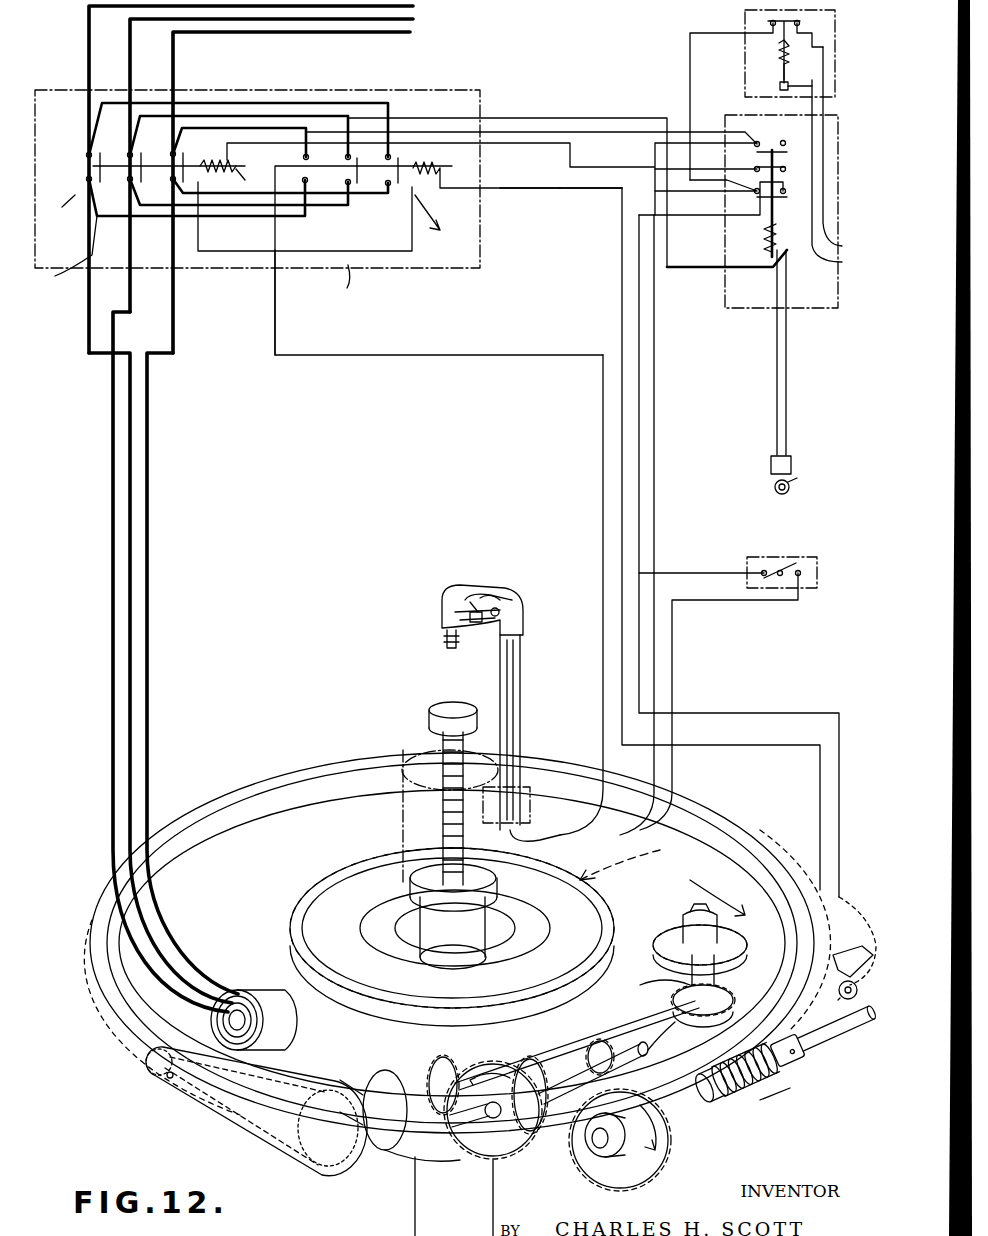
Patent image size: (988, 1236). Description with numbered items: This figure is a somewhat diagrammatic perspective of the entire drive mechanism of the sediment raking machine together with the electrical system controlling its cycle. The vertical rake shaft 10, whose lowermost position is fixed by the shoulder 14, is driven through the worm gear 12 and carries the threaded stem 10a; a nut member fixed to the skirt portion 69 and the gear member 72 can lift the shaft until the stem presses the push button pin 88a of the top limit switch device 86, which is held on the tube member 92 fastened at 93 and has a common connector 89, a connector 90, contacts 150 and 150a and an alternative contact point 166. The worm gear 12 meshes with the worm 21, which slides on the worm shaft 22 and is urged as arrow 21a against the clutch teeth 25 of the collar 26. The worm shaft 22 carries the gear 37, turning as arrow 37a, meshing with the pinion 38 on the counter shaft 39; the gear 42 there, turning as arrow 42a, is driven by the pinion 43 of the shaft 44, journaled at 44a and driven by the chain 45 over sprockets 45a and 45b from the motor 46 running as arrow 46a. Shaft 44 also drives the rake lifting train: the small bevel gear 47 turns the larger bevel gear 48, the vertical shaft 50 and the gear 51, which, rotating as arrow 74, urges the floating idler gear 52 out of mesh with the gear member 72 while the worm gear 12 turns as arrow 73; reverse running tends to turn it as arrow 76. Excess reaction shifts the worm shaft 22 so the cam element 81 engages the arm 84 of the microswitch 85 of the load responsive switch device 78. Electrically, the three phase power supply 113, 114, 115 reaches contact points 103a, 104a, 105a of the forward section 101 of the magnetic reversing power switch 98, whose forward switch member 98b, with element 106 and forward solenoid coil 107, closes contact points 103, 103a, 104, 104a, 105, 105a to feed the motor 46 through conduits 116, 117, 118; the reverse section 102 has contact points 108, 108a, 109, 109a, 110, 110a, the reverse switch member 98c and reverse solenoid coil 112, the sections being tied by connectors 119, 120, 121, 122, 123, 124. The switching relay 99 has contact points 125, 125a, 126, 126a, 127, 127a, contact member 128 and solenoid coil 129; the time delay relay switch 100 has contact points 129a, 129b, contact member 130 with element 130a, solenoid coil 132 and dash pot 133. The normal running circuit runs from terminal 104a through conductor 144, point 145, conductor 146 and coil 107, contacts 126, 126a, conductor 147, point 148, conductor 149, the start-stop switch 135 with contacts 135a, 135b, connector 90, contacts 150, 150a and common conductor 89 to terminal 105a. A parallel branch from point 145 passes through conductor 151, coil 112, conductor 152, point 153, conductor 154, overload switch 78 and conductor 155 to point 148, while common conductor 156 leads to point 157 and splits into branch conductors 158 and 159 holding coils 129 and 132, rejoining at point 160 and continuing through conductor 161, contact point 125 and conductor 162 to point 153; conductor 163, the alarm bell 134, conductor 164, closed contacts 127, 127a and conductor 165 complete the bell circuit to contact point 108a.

The rake shaft 10 is at (420, 925).
The threaded stem 10a is at (443, 820).
The worm gear 12 is at (742, 826).
The abutment collar or shoulder 14 is at (410, 892).
The worm 21 is at (744, 1070).
The arrow 21a is at (780, 1108).
The worm shaft 22 is at (708, 1086).
The clutch teeth 25 is at (837, 1028).
The collar 26 is at (787, 1050).
The gear 37 is at (660, 1180).
The arrow 37a is at (670, 1155).
The pinion 38 is at (597, 1050).
The counter shaft 39 is at (550, 1080).
The gear 42 is at (512, 1160).
The arrow 42a is at (510, 1068).
The pinion 43 is at (435, 1060).
The shaft 44 is at (385, 1090).
The journal 44a is at (405, 1160).
The chain 45 is at (222, 1118).
The sprocket 45a is at (150, 1070).
The sprocket 45b is at (290, 1145).
The motor 46 is at (296, 1030).
The arrow 46a is at (170, 1080).
The small bevel gear 47 is at (665, 978).
The larger bevel gear 48 is at (728, 940).
The vertical shaft 50 is at (716, 978).
The gear 51 is at (735, 1003).
The idler gear 52 is at (640, 948).
The skirt portion 69 is at (403, 843).
The gear member 72 is at (580, 897).
The arrow 73 is at (717, 898).
The arrow 74 is at (690, 1020).
The arrow 76 is at (632, 865).
The load responsive switch device 78 is at (857, 936).
The cam element 81 is at (826, 1007).
The arm 84 is at (845, 956).
The microswitch 85 is at (859, 992).
The top limit switch device 86 is at (515, 584).
The push button pin 88a is at (444, 638).
The common connector 89 is at (399, 356).
The connector 90 is at (668, 790).
The tube member 92 is at (520, 688).
The fastening 93 is at (521, 814).
The magnetic reversing power switch 98 is at (361, 90).
The forward switch member 98b is at (93, 166).
The reverse switch member 98c is at (439, 247).
The switching relay 99 is at (740, 308).
The time delay relay switch 100 is at (741, 20).
The forward switch section 101 is at (57, 209).
The reverse switch section 102 is at (436, 224).
The contact point 103 is at (86, 179).
The contact point 103a is at (86, 154).
The contact point 104 is at (128, 181).
The contact point 104a is at (128, 154).
The contact point 105 is at (171, 181).
The contact point 105a is at (171, 153).
The spring 106 is at (233, 164).
The forward solenoid coil 107 is at (239, 181).
The contact point 108 is at (291, 171).
The contact point 108a is at (303, 155).
The contact point 109 is at (350, 186).
The contact point 109a is at (329, 150).
The contact point 110 is at (388, 188).
The contact point 110a is at (370, 152).
The reverse solenoid coil 112 is at (517, 164).
The power supply phase 113 is at (270, 176).
The power supply phase 114 is at (292, 161).
The power supply phase 115 is at (309, 190).
The power connector 116 is at (89, 336).
The power connector 117 is at (113, 380).
The power connector 118 is at (173, 336).
The connector 119 is at (211, 128).
The connector 120 is at (248, 116).
The connector 121 is at (300, 103).
The connector 122 is at (330, 205).
The connector 123 is at (252, 193).
The connector 124 is at (155, 216).
The contact point 125 is at (755, 194).
The contact point 125a is at (786, 191).
The contact point 126 is at (755, 168).
The contact point 126a is at (786, 168).
The contact point 127 is at (755, 143).
The contact point 127a is at (784, 140).
The contact member 128 is at (790, 214).
The solenoid coil 129 is at (768, 249).
The contact point 129a is at (770, 26).
The contact point 129b is at (800, 22).
The contact member 130 is at (777, 45).
The armature end 130a is at (778, 88).
The solenoid coil 132 is at (780, 60).
The dash pot 133 is at (790, 80).
The alarm bell 134 is at (796, 466).
The start-stop switch 135 is at (782, 556).
The contact 135a is at (762, 570).
The contact 135b is at (804, 571).
The conductor 144 is at (68, 256).
The point 145 is at (198, 251).
The conductor 146 is at (198, 233).
The conductor 147 is at (690, 215).
The point 148 is at (639, 573).
The conductor 149 is at (700, 573).
The contact 150 is at (472, 625).
The contact 150a is at (470, 602).
The conductor 151 is at (352, 280).
The conductor 152 is at (530, 199).
The point 153 is at (620, 189).
The conductor 154 is at (622, 290).
The conductor 155 is at (777, 713).
The common conductor 156 is at (576, 118).
The point 157 is at (790, 255).
The branch conductor 158 is at (847, 146).
The branch conductor 159 is at (842, 174).
The point 160 is at (812, 47).
The conductor 161 is at (690, 33).
The conductor 162 is at (648, 188).
The conductor 163 is at (790, 413).
The conductor 164 is at (775, 413).
The conductor 165 is at (616, 133).
The contact point 166 is at (480, 585).